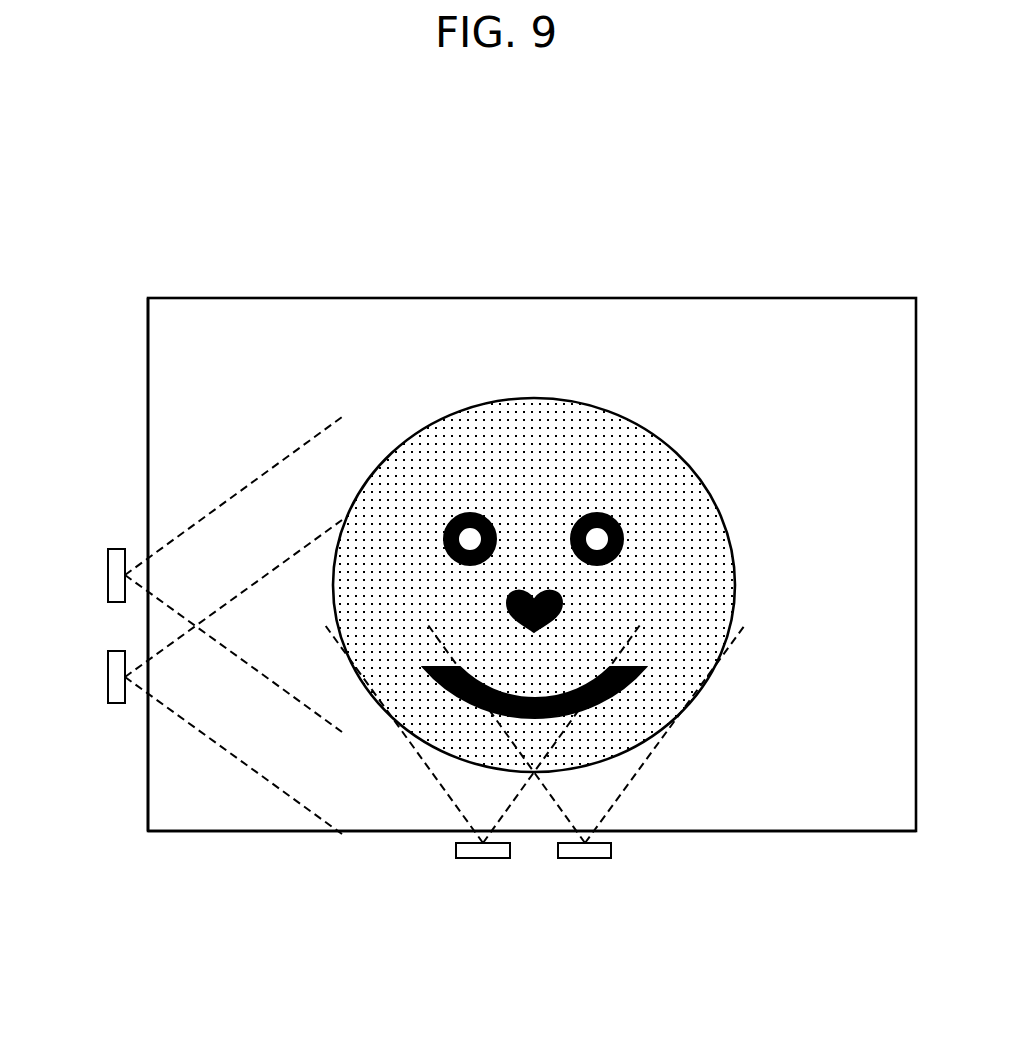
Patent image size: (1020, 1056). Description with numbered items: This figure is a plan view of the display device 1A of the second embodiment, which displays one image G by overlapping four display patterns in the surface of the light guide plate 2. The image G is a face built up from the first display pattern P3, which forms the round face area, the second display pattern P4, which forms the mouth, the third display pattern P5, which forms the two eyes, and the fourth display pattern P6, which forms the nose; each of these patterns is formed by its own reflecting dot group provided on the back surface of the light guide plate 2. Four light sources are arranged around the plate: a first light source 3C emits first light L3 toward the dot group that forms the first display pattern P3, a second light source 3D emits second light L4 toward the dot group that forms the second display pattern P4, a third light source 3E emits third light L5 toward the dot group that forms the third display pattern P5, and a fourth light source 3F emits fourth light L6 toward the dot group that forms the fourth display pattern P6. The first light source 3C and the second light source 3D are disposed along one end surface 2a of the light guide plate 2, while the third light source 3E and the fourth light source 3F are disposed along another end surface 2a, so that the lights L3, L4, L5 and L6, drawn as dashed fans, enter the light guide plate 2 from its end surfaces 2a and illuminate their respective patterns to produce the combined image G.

The display device 1A is at (213, 215).
The light guide plate 2 is at (806, 288).
The end surface 2a is at (148, 458).
The first light source 3C is at (108, 575).
The second light source 3D is at (108, 677).
The third light source 3E is at (482, 858).
The fourth light source 3F is at (583, 858).
The first light L3 is at (275, 465).
The second light L4 is at (265, 778).
The third light L5 is at (422, 758).
The fourth light L6 is at (630, 780).
The image G is at (601, 540).
The first display pattern P3 is at (657, 467).
The second display pattern P4 is at (628, 688).
The third display pattern P5 is at (593, 517).
The fourth display pattern P6 is at (560, 602).